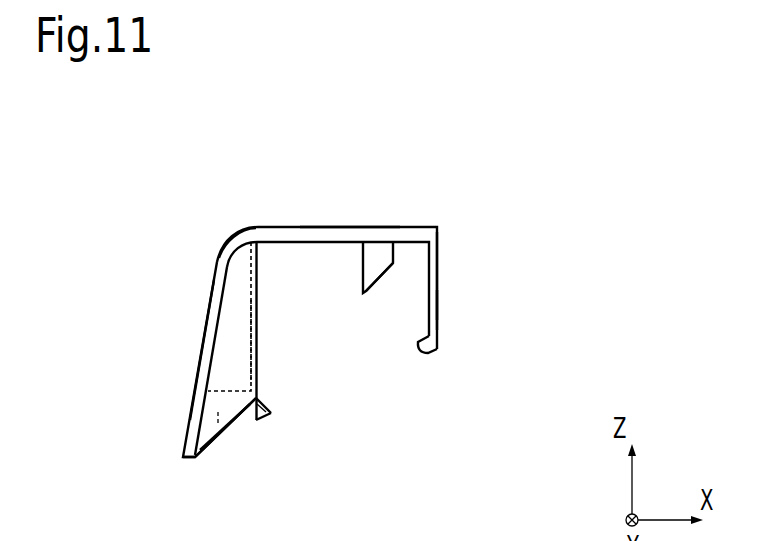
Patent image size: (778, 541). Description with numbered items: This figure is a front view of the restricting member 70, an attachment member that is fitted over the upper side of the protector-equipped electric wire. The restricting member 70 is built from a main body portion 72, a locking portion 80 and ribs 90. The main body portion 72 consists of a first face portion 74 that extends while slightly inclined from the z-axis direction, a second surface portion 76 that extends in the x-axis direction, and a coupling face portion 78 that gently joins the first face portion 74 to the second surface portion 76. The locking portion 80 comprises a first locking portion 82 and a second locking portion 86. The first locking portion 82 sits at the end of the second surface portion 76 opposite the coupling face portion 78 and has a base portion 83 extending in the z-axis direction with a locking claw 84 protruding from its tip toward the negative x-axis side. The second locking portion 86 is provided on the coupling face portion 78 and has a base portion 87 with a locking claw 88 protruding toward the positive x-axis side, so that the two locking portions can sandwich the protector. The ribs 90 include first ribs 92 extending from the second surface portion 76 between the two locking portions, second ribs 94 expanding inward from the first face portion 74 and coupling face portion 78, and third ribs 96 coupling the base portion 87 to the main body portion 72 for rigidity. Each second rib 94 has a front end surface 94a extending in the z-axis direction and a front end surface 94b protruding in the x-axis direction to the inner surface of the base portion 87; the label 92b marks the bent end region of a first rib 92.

The restricting member 70 is at (246, 149).
The main body portion 72 is at (405, 228).
The first face portion 74 is at (203, 356).
The second surface portion 76 is at (318, 240).
The coupling face portion 78 is at (233, 243).
The locking portion 80 is at (428, 356).
The first locking portion 82 is at (509, 318).
The base portion 83 is at (438, 301).
The locking claw 84 is at (463, 335).
The second locking portion 86 is at (342, 396).
The base portion 87 is at (272, 406).
The locking claw 88 is at (273, 416).
The ribs 90 is at (257, 374).
The first ribs 92 is at (382, 293).
The bent end of first positioning tab 92b is at (380, 280).
The second ribs 94 is at (260, 374).
The front end surface 94a is at (237, 417).
The front end surface 94b is at (257, 318).
The third ribs 96 is at (231, 310).